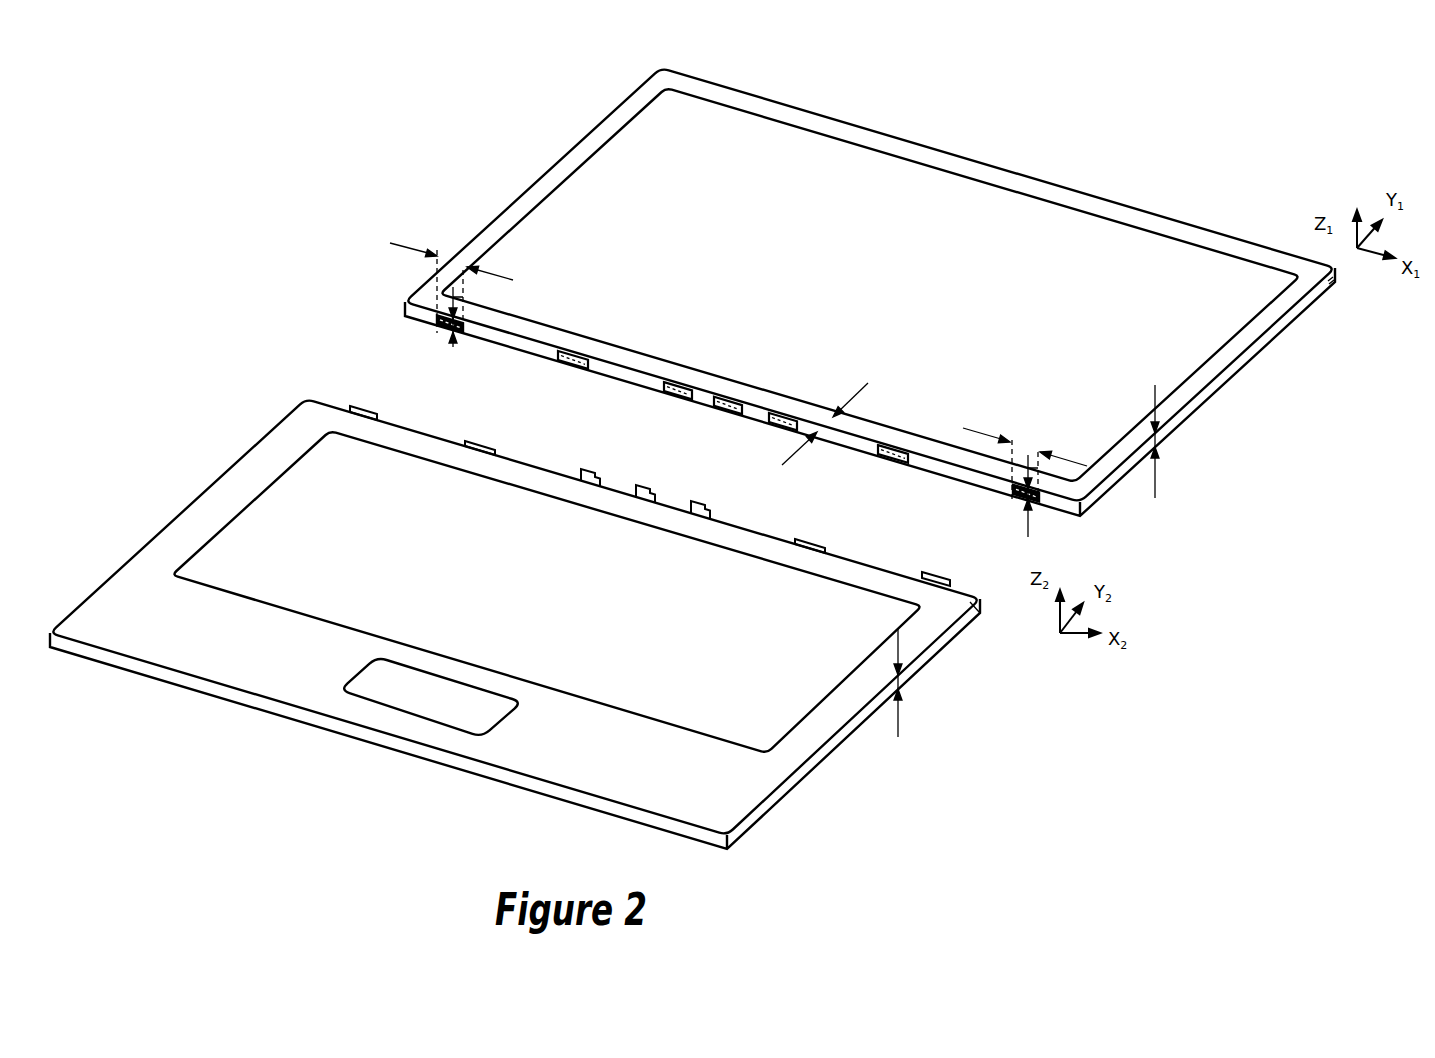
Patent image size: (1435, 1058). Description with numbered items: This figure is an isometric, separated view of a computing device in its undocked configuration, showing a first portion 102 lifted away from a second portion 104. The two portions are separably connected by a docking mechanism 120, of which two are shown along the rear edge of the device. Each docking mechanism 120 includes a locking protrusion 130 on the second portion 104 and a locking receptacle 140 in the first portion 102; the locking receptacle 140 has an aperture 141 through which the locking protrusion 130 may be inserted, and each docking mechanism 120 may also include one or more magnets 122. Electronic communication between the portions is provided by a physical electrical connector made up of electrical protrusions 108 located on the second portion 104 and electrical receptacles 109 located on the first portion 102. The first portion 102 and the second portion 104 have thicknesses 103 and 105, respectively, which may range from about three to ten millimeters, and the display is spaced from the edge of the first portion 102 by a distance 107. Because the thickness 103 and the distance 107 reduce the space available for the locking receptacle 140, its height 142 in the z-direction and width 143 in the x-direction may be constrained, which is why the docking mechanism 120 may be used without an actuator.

The first portion 102 is at (1245, 412).
The thickness 103 is at (1155, 400).
The second portion 104 is at (947, 732).
The thickness 105 is at (908, 657).
The distance 107 is at (828, 403).
The electrical protrusion 108 is at (590, 470).
The electrical receptacle 109 is at (667, 395).
The docking mechanism 120 is at (330, 322).
The magnet 122 is at (565, 363).
The locking protrusion 130 is at (373, 407).
The locking receptacle 140 is at (438, 329).
The aperture 141 is at (456, 343).
The height 142 is at (455, 300).
The width 143 is at (505, 279).